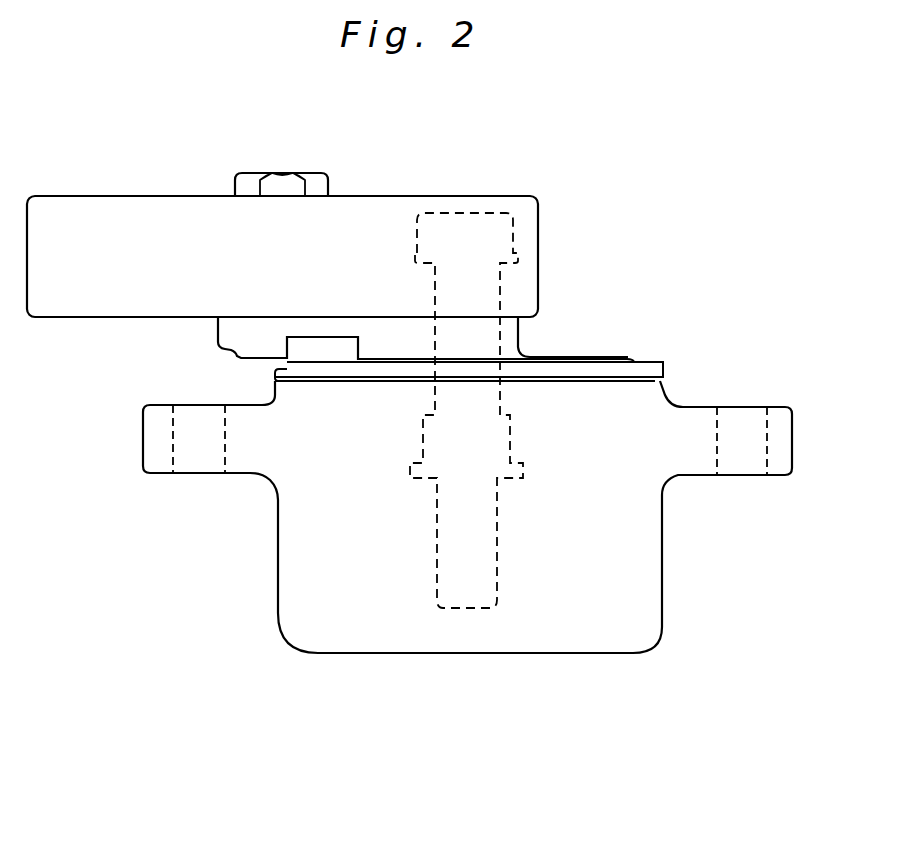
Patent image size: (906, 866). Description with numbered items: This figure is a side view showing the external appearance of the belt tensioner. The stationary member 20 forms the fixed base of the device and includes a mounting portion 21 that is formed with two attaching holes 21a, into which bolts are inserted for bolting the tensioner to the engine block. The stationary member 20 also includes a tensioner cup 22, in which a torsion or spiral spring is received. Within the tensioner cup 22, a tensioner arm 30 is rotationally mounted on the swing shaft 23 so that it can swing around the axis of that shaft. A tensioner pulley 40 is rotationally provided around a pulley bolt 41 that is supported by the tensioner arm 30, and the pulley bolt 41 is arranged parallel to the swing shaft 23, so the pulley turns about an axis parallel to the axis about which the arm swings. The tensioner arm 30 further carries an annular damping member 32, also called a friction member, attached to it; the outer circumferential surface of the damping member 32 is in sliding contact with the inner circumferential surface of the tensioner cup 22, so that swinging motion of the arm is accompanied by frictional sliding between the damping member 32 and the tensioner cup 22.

The stationary member 20 is at (663, 562).
The mounting portion 21 is at (793, 478).
The attaching holes 21a is at (766, 428).
The tensioner cup 22 is at (648, 602).
The swing shaft 23 is at (512, 440).
The tensioner arm 30 is at (218, 336).
The damping member 32 is at (653, 362).
The tensioner pulley 40 is at (75, 210).
The pulley bolt 41 is at (278, 186).